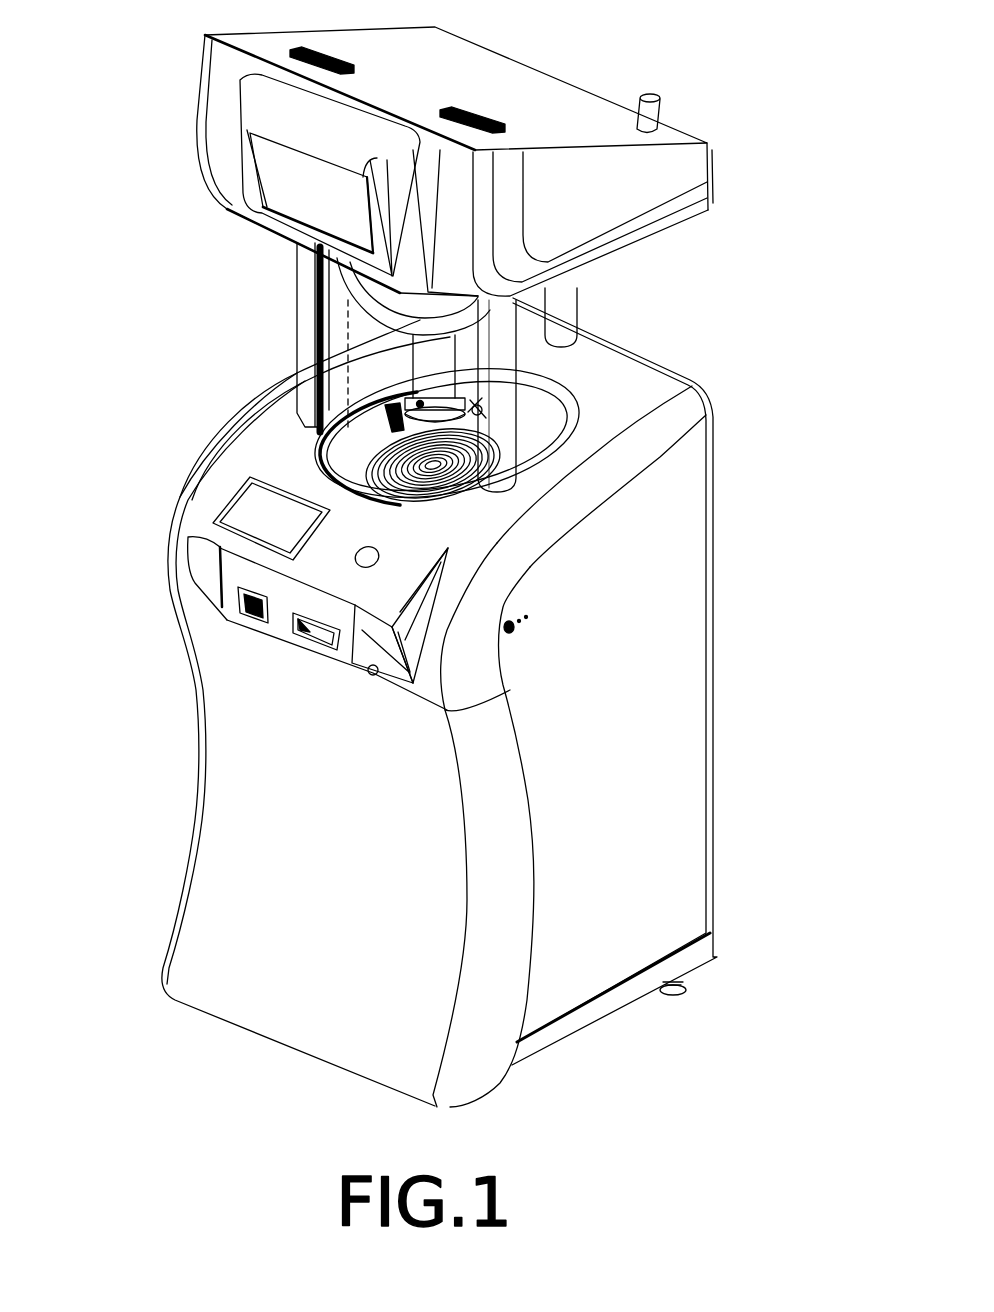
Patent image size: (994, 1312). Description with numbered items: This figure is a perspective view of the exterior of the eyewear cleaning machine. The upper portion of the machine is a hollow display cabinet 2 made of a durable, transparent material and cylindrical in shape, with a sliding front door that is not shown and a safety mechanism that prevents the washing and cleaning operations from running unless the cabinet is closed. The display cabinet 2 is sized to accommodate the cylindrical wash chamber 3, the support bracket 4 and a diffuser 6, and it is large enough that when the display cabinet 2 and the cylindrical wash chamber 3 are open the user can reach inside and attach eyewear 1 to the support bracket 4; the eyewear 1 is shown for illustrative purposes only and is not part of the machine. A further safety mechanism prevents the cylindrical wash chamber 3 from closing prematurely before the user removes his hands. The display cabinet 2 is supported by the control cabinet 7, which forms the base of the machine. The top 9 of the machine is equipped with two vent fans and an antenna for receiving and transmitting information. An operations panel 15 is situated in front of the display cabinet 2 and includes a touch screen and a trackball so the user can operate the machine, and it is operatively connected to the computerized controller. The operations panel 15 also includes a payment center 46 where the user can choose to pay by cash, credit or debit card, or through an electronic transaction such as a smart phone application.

The top 9 is at (217, 95).
The display cabinet 2 is at (577, 320).
The diffuser 6 is at (398, 338).
The cylindrical wash chamber 3 is at (395, 385).
The eyewear 1 is at (398, 425).
The support bracket 4 is at (482, 408).
The control cabinet 7 is at (662, 653).
The operations panel 15 is at (200, 532).
The payment center 46 is at (232, 594).